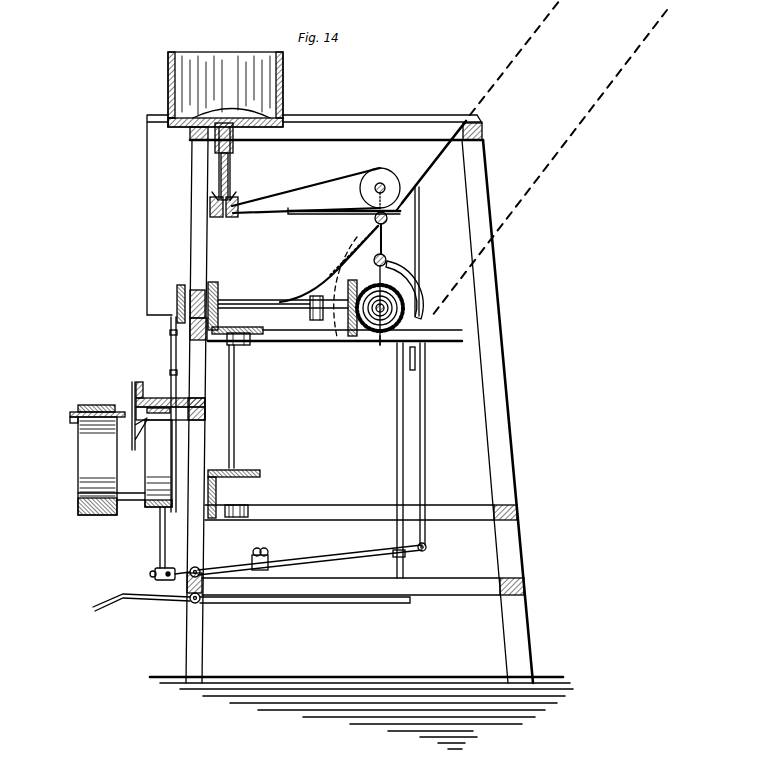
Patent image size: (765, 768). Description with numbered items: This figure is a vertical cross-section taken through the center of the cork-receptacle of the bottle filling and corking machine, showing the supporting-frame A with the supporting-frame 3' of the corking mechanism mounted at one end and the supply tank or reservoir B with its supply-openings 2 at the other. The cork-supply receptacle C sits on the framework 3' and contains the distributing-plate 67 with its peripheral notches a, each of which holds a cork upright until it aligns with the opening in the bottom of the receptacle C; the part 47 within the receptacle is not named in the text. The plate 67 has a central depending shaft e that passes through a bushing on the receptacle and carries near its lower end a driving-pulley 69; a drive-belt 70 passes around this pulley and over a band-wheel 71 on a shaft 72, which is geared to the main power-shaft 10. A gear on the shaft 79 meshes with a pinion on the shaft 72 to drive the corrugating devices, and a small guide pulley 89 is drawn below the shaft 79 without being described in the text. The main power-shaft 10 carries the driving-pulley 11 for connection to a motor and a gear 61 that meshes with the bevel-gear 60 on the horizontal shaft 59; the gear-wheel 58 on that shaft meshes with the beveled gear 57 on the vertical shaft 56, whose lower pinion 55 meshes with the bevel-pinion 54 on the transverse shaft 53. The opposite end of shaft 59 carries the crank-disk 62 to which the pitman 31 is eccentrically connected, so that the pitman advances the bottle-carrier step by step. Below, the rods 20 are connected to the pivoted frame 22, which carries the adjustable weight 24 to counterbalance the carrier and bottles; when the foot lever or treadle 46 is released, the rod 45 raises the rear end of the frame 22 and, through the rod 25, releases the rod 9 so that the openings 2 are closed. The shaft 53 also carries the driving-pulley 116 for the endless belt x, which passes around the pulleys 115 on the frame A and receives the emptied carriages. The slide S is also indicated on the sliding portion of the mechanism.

The supply-openings 2 is at (143, 400).
The supporting-frame of the corking mechanism 3' is at (314, 204).
The rod 9 is at (422, 251).
The main power-shaft 10 is at (368, 291).
The driving-pulley 11 is at (421, 316).
The rods 20 is at (168, 543).
The pivoted frame 22 is at (308, 559).
The weight 24 is at (249, 559).
The rod 25 is at (427, 444).
The pitman 31 is at (164, 414).
The rod 45 is at (401, 460).
The foot lever or treadle 46 is at (251, 602).
The dome in cylinder 47 is at (247, 112).
The transverse shaft 53 is at (144, 469).
The bevel-pinion 54 is at (213, 518).
The pinion 55 is at (260, 473).
The vertical shaft 56 is at (243, 406).
The beveled gear 57 is at (250, 341).
The gear-wheel 58 is at (222, 303).
The horizontal shaft 59 is at (298, 273).
The bevel-gear 60 is at (356, 337).
The gear 61 is at (380, 338).
The crank-disk 62 is at (177, 298).
The distributing-plate 67 is at (192, 128).
The driving-pulley 69 is at (224, 214).
The drive-belt 70 is at (316, 198).
The pulley or band-wheel 71 is at (380, 190).
The shaft 72 is at (375, 189).
The shaft 79 is at (445, 137).
The guide pulley 89 is at (387, 259).
The pulleys 115 is at (80, 428).
The driving-pulley 116 is at (78, 493).
The supporting-frame A is at (361, 436).
The supply tank or reservoir B is at (274, 244).
The cork-supply receptacle C is at (225, 89).
The slide S is at (347, 130).
The peripheral notches a is at (170, 118).
The depending shaft e is at (230, 157).
The endless belt x is at (97, 466).